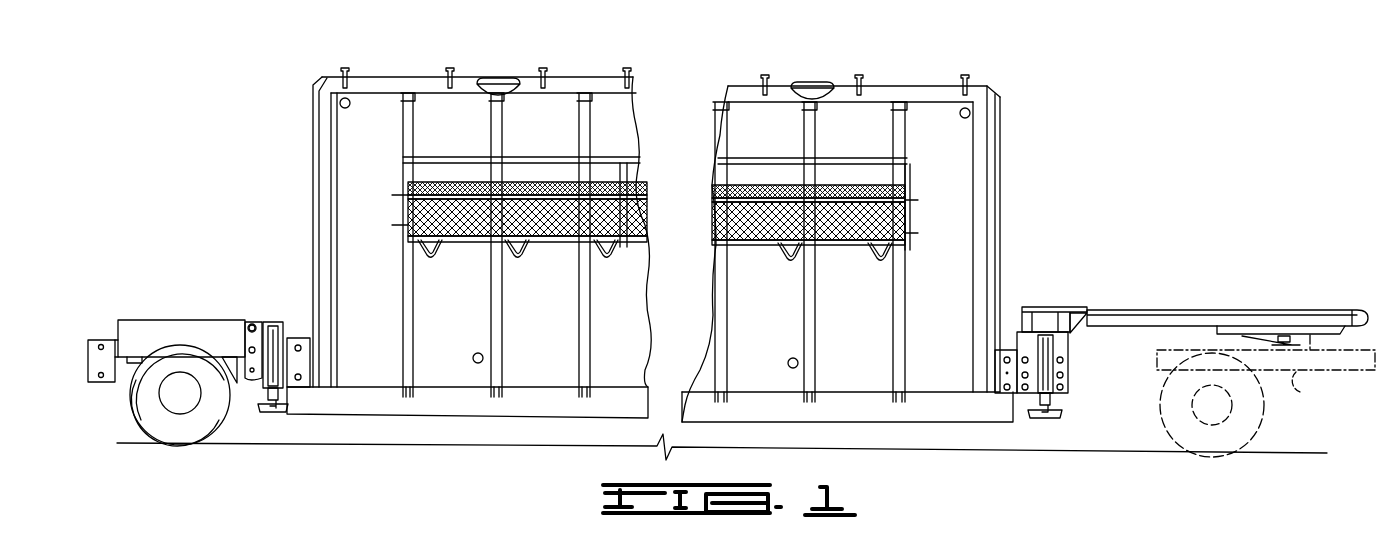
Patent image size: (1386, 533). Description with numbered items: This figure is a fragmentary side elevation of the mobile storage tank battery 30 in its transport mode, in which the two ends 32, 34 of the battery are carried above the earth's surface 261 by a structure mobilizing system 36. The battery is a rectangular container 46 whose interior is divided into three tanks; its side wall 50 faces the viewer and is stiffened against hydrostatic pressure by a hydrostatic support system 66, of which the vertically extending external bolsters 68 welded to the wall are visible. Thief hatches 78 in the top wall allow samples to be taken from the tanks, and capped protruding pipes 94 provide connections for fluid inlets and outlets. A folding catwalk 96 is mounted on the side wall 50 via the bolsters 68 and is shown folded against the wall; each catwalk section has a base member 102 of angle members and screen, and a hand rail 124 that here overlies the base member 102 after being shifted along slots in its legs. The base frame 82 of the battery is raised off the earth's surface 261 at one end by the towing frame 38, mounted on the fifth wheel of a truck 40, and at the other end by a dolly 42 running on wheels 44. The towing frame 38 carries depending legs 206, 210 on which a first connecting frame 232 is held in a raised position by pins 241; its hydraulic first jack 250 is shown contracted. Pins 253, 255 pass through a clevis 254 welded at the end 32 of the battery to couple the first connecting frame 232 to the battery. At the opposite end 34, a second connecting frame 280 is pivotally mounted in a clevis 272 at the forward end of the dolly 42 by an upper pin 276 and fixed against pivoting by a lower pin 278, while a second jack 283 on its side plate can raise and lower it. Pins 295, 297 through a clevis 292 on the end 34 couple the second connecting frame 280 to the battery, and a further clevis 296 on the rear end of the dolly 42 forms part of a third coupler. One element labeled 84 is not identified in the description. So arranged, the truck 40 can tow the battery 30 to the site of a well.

The mobile storage tank battery 30 is at (900, 224).
The end 32 is at (1004, 199).
The end 34 is at (310, 159).
The structure mobilizing system 36 is at (1227, 305).
The towing frame 38 is at (1168, 311).
The truck 40 is at (1296, 391).
The dolly 42 is at (173, 323).
The wheels 44 is at (160, 425).
The rectangular container 46 is at (943, 80).
The side wall 50 is at (952, 322).
The hydrostatic support system 66 is at (912, 282).
The external bolsters 68 is at (812, 318).
The thief hatches 78 is at (489, 73).
The base frame 82 is at (845, 428).
The floor 84 is at (745, 412).
The protruding pipes 94 is at (352, 78).
The folding catwalk 96 is at (916, 190).
The base member 102 is at (760, 252).
The hand rail 124 is at (836, 150).
The depending leg 206 is at (1066, 311).
The depending leg 210 is at (1069, 346).
The first connecting frame 232 is at (1077, 343).
The pins 241 is at (1064, 374).
The first jack 250 is at (1065, 387).
The pin 253 is at (1004, 360).
The clevis 254 is at (1012, 372).
The pin 255 is at (1004, 387).
The earth's surface 261 is at (433, 446).
The clevis 272 is at (249, 323).
The upper pin 276 is at (256, 325).
The lower pin 278 is at (253, 360).
The second connecting frame 280 is at (302, 362).
The second jack 283 is at (275, 342).
The clevis 292 is at (330, 360).
The pin 295 is at (301, 348).
The clevis 296 is at (90, 355).
The pin 297 is at (301, 377).